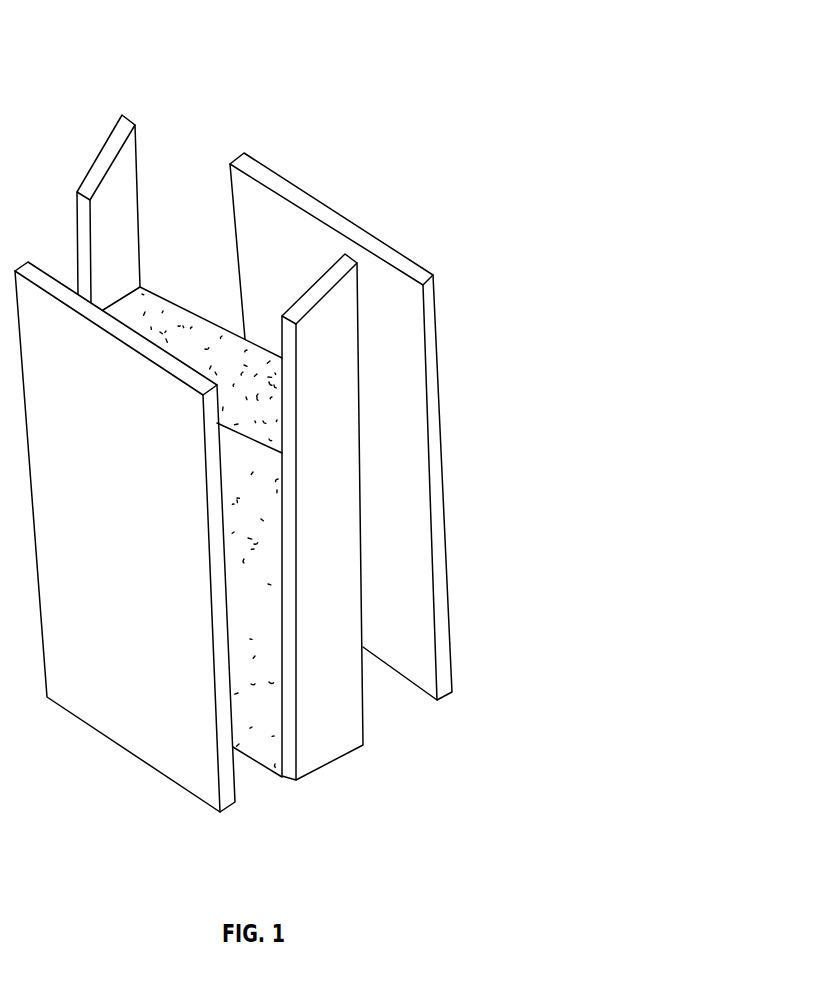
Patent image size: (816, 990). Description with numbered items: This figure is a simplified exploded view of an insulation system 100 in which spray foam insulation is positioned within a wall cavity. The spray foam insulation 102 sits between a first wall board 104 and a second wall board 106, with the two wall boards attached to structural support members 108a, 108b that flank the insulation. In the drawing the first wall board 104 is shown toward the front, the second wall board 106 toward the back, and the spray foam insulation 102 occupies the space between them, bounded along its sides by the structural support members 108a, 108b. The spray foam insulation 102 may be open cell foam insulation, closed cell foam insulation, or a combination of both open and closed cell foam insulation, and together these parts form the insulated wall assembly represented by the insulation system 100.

The insulation system 100 is at (448, 165).
The spray foam insulation 102 is at (212, 357).
The first wall board 104 is at (105, 700).
The second wall board 106 is at (403, 408).
The structural support member 108a is at (342, 310).
The structural support member 108b is at (122, 158).